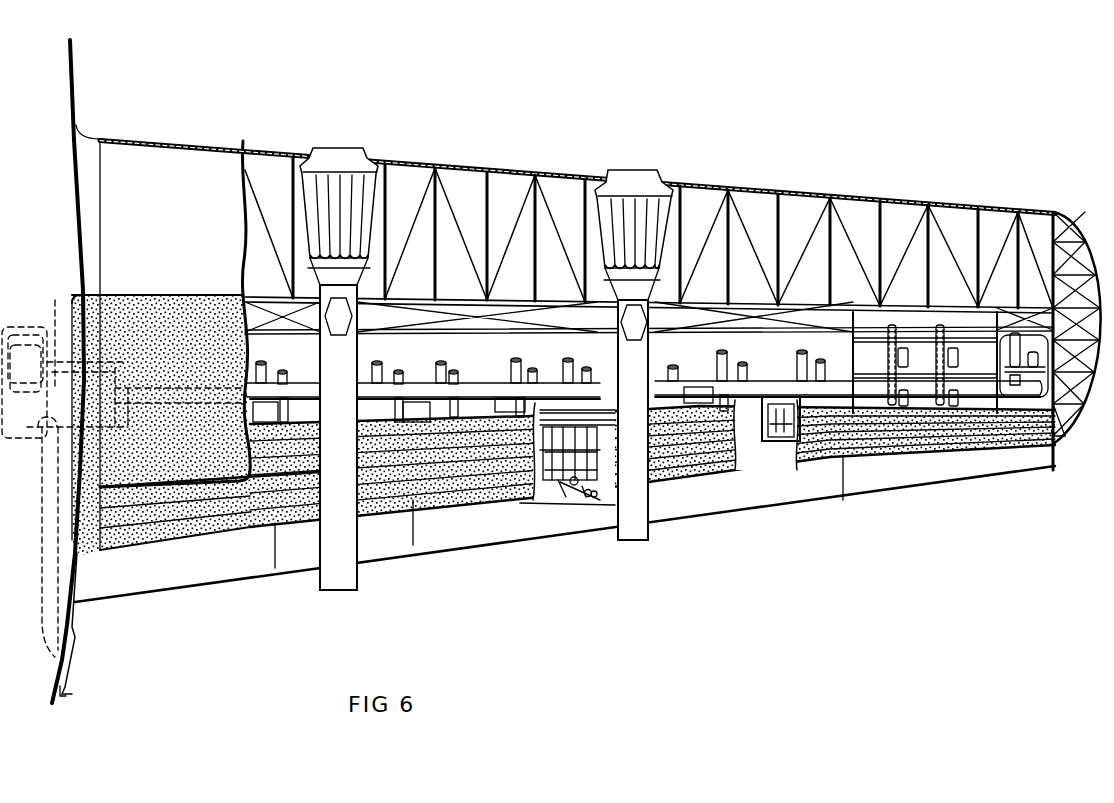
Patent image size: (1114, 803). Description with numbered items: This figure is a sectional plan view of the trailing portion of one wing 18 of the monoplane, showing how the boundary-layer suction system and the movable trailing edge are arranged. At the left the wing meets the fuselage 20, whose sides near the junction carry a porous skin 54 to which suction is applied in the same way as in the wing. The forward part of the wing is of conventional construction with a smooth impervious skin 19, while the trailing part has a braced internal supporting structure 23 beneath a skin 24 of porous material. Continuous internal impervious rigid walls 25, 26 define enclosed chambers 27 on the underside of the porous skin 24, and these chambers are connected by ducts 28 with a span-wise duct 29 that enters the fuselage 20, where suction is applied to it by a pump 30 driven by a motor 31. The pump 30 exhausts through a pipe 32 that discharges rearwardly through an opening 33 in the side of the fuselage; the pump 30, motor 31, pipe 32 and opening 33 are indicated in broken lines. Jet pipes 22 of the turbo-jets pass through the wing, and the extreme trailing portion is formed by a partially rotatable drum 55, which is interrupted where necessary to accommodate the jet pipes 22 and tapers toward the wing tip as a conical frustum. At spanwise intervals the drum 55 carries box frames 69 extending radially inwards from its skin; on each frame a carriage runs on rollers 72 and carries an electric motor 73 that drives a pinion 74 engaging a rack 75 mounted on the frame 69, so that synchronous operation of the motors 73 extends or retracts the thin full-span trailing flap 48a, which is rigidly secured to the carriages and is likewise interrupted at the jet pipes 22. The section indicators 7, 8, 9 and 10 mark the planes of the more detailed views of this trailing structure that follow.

The section line 7- 7 is at (588, 385).
The section line 8- 8 is at (768, 380).
The access opening fitting 9 is at (766, 447).
The connection device 10 is at (600, 501).
The monoplane wing 18 is at (447, 150).
The smooth skin 19 is at (150, 195).
The fuselage 20 is at (50, 117).
The jet pipes 22 is at (335, 578).
The braced internal supporting structure 23 is at (447, 185).
The porous skin 24 is at (163, 322).
The impervious rigid wall 25 is at (966, 318).
The impervious rigid wall 26 is at (950, 402).
The enclosed chambers 27 is at (940, 403).
The ducts 28 is at (285, 375).
The span-wise duct 29 is at (490, 404).
The pump 30 is at (135, 360).
The motor 31 is at (22, 357).
The exhaust pipe 32 is at (48, 565).
The opening 33 is at (66, 692).
The trailing flap 48a is at (870, 482).
The porous skin 54 is at (78, 292).
The partially rotatable drum 55 is at (275, 568).
The box frames 69 is at (510, 405).
The rollers 72 is at (583, 478).
The electric motor 73 is at (584, 497).
The pinion 74 is at (564, 497).
The rack 75 is at (566, 452).